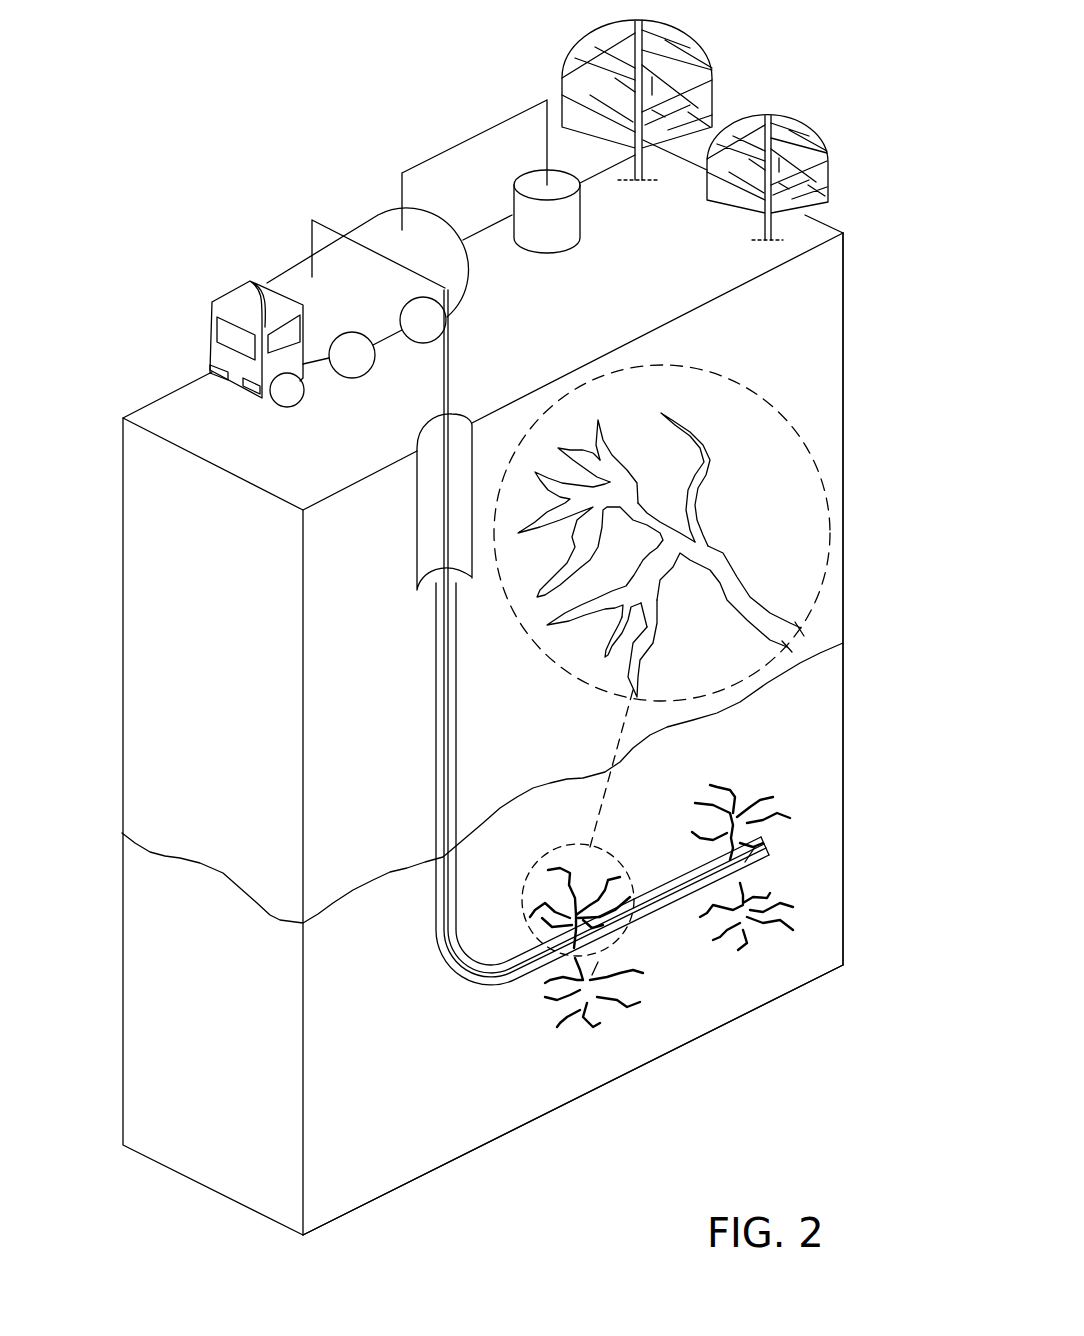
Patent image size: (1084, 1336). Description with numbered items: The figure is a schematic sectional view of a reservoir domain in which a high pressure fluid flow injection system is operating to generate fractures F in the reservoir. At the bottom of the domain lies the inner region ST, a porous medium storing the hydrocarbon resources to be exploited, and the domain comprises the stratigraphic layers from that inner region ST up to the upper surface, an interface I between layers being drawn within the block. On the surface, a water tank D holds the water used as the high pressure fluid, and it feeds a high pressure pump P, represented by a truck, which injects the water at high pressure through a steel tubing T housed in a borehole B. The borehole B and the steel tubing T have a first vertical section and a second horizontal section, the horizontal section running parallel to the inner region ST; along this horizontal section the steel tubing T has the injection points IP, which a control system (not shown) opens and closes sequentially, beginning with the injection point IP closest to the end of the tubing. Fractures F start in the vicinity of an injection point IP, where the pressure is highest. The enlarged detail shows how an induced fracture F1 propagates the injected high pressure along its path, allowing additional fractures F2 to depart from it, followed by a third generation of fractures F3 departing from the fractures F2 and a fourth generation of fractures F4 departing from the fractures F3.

The high pressure pump P is at (248, 278).
The water tank D is at (560, 213).
The steel tubing T is at (443, 520).
The borehole B is at (433, 766).
The interface between geological layers I is at (180, 858).
The induced fracture F1 is at (767, 615).
The second generation of fractures F2 is at (608, 440).
The third generation of fractures F3 is at (560, 450).
The fourth generation of fractures F4 is at (595, 635).
The induced fractures F is at (765, 793).
The injection points IP is at (745, 863).
The inner region ST is at (403, 1122).